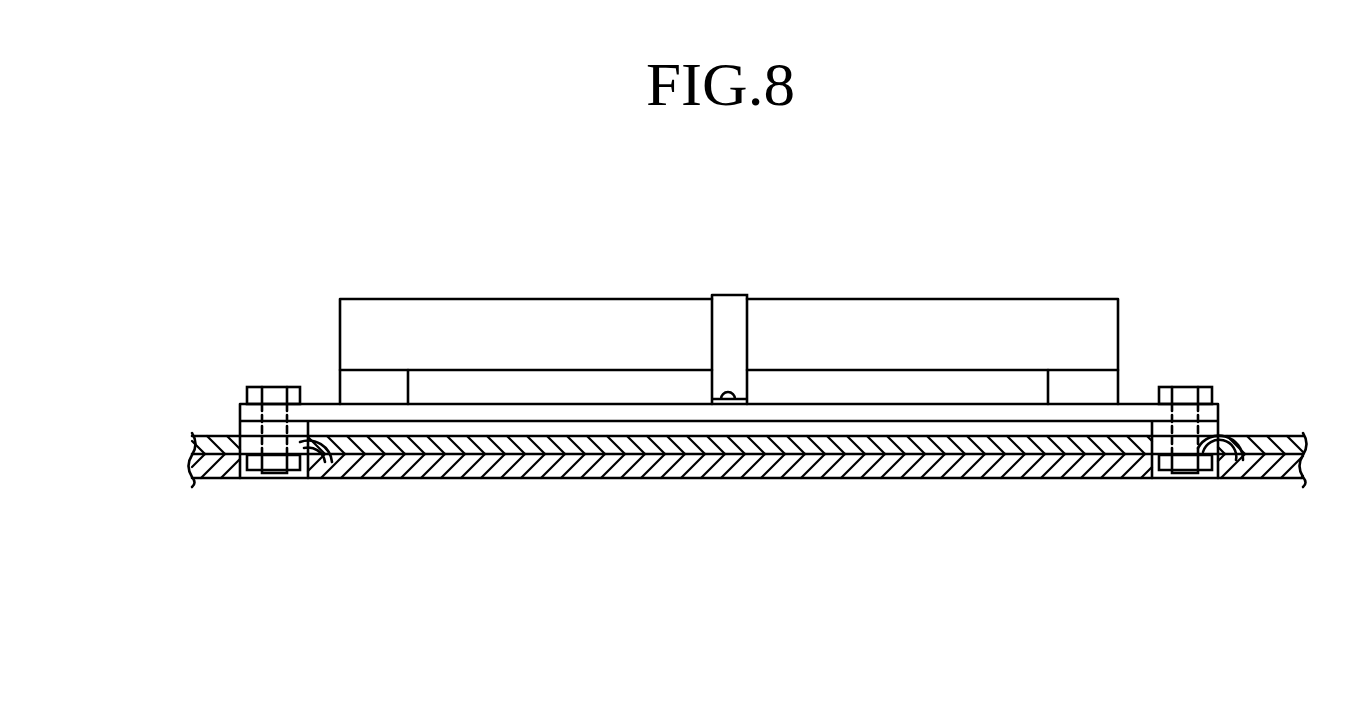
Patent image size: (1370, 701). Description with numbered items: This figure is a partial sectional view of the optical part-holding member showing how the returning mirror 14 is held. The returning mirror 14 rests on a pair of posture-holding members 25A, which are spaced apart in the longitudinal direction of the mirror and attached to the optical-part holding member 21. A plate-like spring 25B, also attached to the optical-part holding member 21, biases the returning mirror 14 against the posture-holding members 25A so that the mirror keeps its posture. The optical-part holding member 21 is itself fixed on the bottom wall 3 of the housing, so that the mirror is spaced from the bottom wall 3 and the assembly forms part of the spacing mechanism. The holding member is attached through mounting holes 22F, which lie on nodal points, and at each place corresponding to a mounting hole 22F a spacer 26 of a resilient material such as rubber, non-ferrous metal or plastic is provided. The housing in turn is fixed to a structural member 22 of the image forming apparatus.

The bottom wall 3 is at (728, 447).
The returning mirror 14 is at (930, 325).
The optical-part holding member 21 is at (900, 415).
The structural member 22 is at (818, 465).
The mounting holes 22F is at (332, 462).
The posture-holding members 25A is at (375, 393).
The plate-like spring 25B is at (728, 313).
The spacer 26 is at (248, 430).